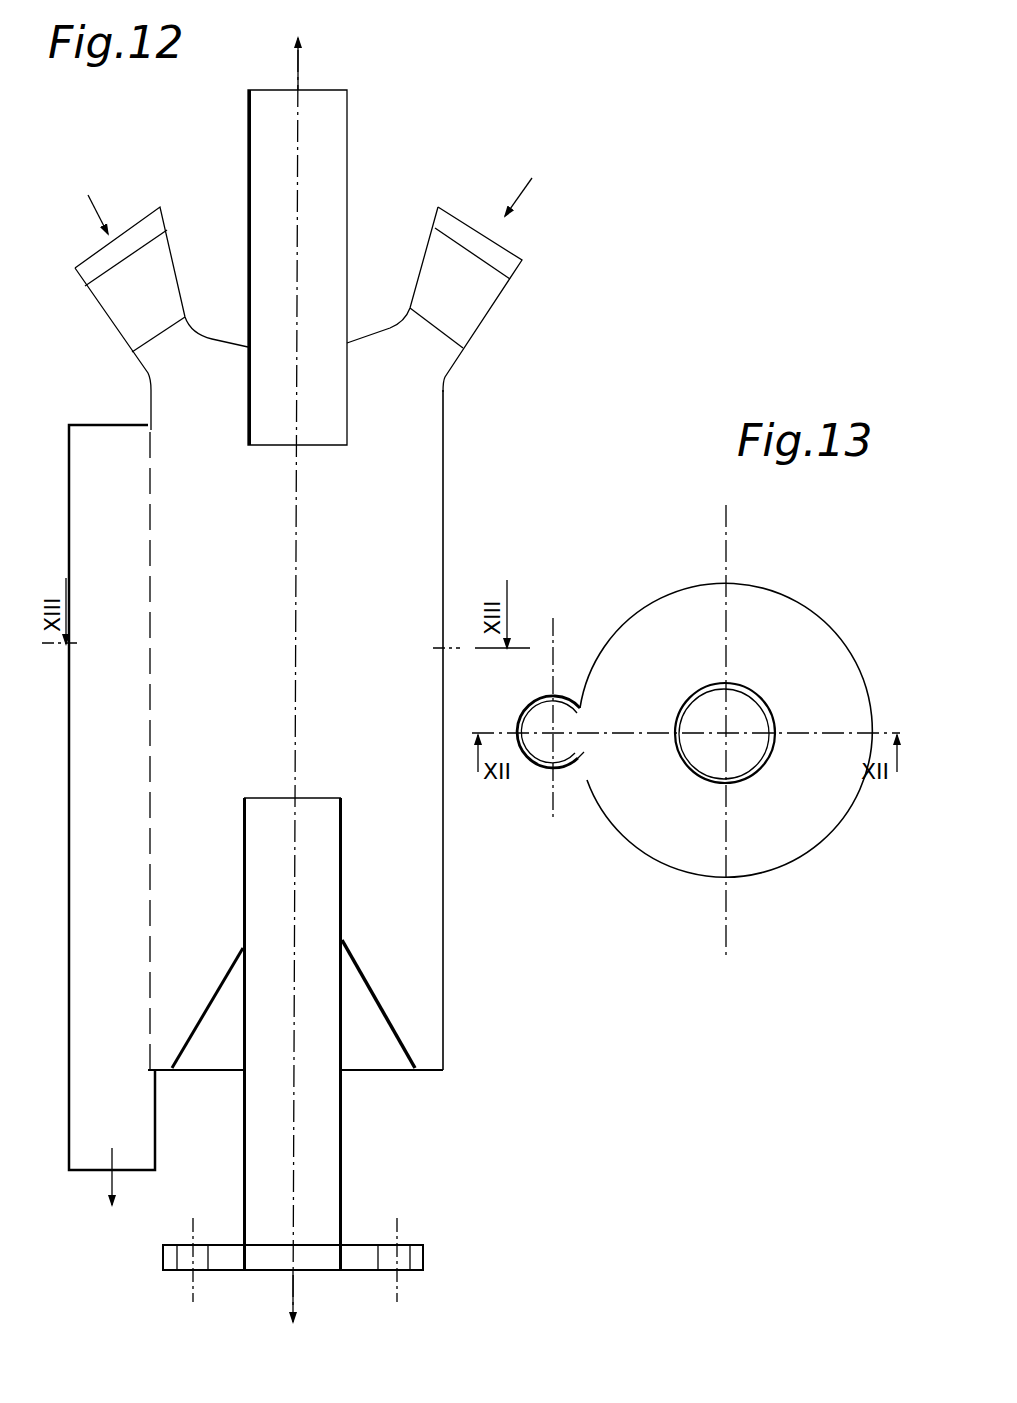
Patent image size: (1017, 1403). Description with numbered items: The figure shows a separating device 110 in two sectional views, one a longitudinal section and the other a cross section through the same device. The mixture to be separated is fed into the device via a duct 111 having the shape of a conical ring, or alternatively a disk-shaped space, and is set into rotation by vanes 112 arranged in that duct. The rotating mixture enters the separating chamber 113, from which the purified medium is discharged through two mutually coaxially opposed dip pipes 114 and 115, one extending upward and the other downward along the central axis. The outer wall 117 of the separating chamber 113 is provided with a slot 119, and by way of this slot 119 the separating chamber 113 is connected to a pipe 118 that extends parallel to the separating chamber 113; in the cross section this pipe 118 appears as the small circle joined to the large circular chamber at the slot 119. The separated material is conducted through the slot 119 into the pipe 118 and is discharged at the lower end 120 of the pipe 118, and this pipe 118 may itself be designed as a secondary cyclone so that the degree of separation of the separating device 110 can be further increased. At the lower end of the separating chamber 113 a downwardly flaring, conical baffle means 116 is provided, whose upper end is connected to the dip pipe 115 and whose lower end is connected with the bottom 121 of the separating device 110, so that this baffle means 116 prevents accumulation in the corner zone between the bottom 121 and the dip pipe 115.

In FIG. 12, the separating device 110 is at (470, 455).
In FIG. 13, the separating device 110 is at (658, 553).
In FIG. 12, the duct 111 is at (512, 267).
In FIG. 12, the vanes 112 is at (473, 307).
In FIG. 12, the separating chamber 113 is at (392, 538).
In FIG. 12, the dip pipe 114 is at (323, 191).
In FIG. 12, the dip pipe 115 is at (326, 884).
In FIG. 13, the dip pipe 115 is at (773, 708).
In FIG. 12, the conical baffle means 116 is at (385, 1014).
In FIG. 12, the outer wall 117 is at (445, 679).
In FIG. 13, the outer wall 117 is at (688, 878).
In FIG. 12, the pipe 118 is at (96, 750).
In FIG. 13, the pipe 118 is at (570, 750).
In FIG. 13, the slot 119 is at (577, 742).
In FIG. 12, the lower end 120 is at (93, 1147).
In FIG. 12, the bottom 121 is at (390, 1072).